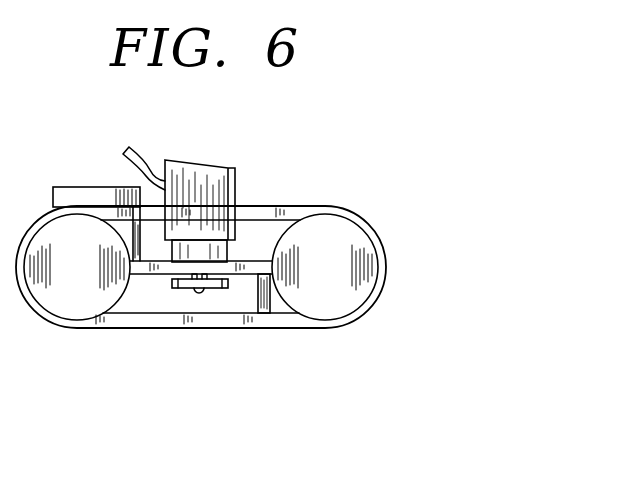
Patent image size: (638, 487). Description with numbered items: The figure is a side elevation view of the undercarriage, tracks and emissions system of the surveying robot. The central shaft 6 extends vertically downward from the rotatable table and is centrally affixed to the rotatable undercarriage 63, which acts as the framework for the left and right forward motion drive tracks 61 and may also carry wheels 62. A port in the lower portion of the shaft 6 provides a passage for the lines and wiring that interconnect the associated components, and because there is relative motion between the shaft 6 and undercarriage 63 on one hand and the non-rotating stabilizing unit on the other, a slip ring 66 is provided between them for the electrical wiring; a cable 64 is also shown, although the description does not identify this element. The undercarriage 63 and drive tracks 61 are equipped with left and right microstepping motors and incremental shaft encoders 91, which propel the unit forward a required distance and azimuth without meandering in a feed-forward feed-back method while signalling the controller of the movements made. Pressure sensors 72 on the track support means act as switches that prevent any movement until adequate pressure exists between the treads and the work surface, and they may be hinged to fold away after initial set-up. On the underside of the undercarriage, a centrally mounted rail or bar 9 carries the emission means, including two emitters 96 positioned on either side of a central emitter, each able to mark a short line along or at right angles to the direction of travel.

The shaft 6 is at (195, 252).
The rail or bar 9 is at (224, 288).
The drive tracks 61 is at (302, 213).
The wheels 62 is at (355, 238).
The undercarriage 63 is at (143, 268).
The cable 64 is at (143, 163).
The slip ring 66 is at (208, 175).
The pressure sensors 72 is at (268, 305).
The microstepping motors and incremental shaft encoders 91 is at (83, 197).
The emitters 96 is at (199, 292).